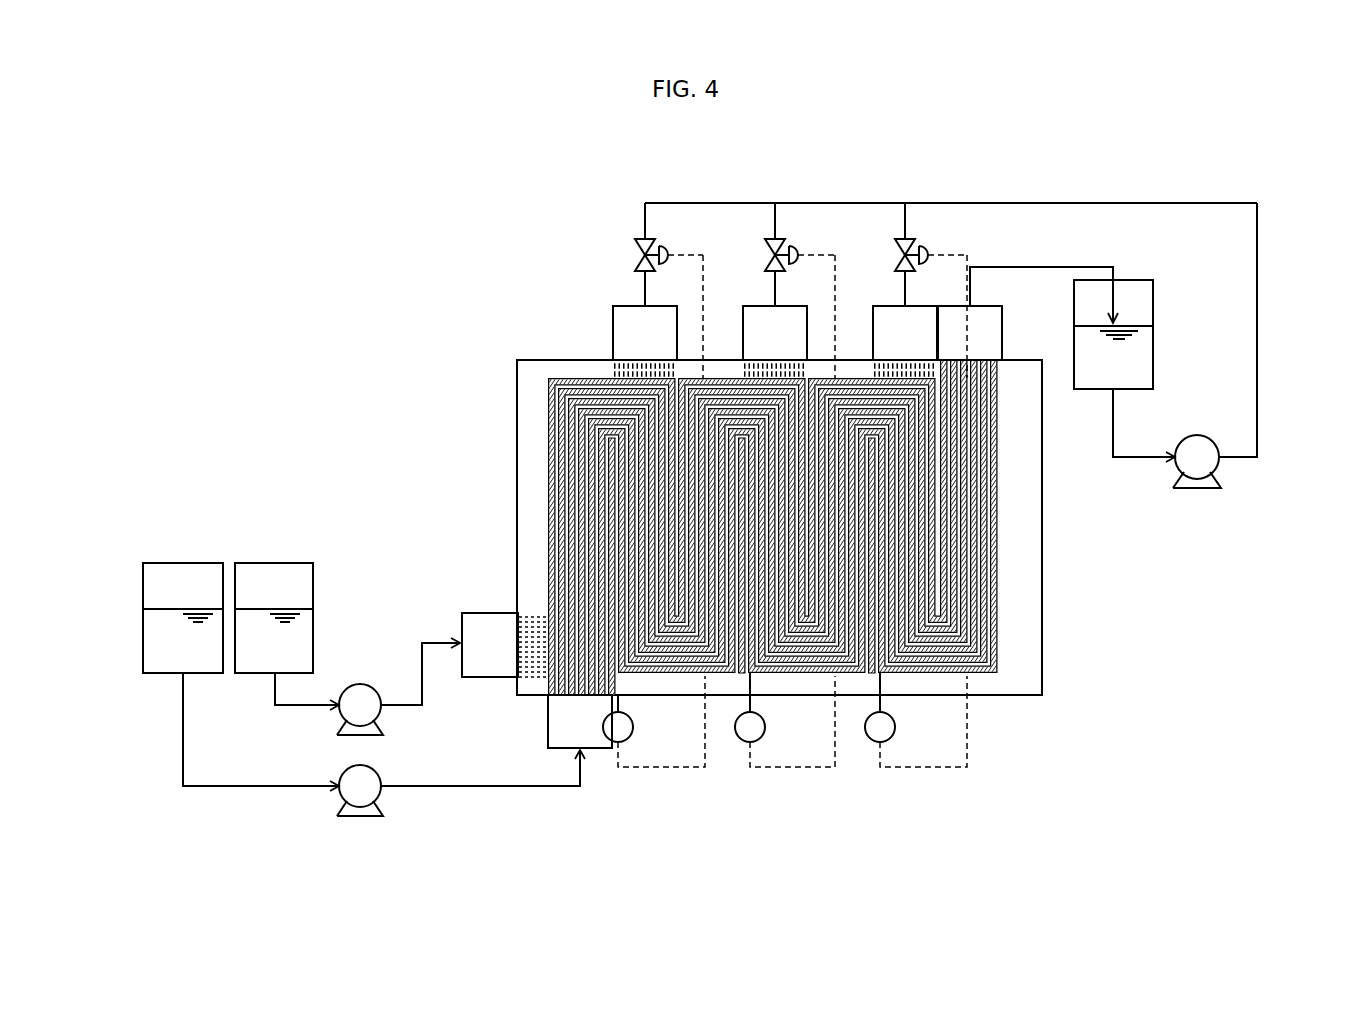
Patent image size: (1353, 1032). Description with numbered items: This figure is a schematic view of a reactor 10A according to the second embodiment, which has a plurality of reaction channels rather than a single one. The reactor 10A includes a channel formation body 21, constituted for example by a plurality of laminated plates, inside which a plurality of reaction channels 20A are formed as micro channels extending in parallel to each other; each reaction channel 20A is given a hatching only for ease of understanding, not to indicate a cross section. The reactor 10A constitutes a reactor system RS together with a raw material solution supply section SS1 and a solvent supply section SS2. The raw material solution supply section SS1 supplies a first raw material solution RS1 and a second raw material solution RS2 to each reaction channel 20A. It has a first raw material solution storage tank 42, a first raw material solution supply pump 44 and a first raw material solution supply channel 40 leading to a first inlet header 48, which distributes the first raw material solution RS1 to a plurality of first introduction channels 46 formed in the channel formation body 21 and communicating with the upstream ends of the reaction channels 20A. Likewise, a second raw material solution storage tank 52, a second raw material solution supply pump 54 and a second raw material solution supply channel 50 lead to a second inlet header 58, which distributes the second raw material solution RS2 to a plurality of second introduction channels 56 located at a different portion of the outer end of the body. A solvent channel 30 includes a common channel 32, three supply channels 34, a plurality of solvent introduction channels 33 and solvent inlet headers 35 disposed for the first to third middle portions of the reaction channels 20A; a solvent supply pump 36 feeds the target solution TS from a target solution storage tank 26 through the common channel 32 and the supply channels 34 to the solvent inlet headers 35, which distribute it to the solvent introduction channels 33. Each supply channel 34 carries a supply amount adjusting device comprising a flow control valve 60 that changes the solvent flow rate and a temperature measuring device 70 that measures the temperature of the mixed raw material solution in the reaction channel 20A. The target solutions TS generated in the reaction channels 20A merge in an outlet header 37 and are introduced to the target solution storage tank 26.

The reactor 10A is at (768, 537).
The reaction channels 20A is at (578, 438).
The channel formation body 21 is at (1046, 486).
The target solution storage tank 26 is at (1093, 307).
The solvent channel 30 is at (965, 346).
The common channel 32 is at (1259, 362).
The solvent introduction channels 33 is at (612, 372).
The supply channels 34 is at (647, 206).
The solvent inlet headers 35 is at (622, 323).
The solvent supply pump 36 is at (1197, 435).
The outlet header 37 is at (1002, 322).
The first raw material solution supply channel 40 is at (400, 708).
The first raw material solution storage tank 42 is at (314, 613).
The first raw material solution supply pump 44 is at (385, 640).
The first introduction channels 46 is at (552, 615).
The first inlet header 48 is at (462, 625).
The second raw material solution supply channel 50 is at (412, 790).
The second raw material solution storage tank 52 is at (154, 632).
The second raw material solution supply pump 54 is at (372, 766).
The second introduction channels 56 is at (572, 697).
The second inlet header 58 is at (578, 752).
The flow control valve 60 is at (634, 250).
The temperature measuring device 70 is at (634, 730).
The reactor system RS is at (998, 172).
The first raw material solution RS1 is at (305, 630).
The second raw material solution RS2 is at (150, 637).
The raw material solution supply section SS1 is at (335, 719).
The solvent supply section SS2 is at (1191, 485).
The target solution TS is at (1152, 337).